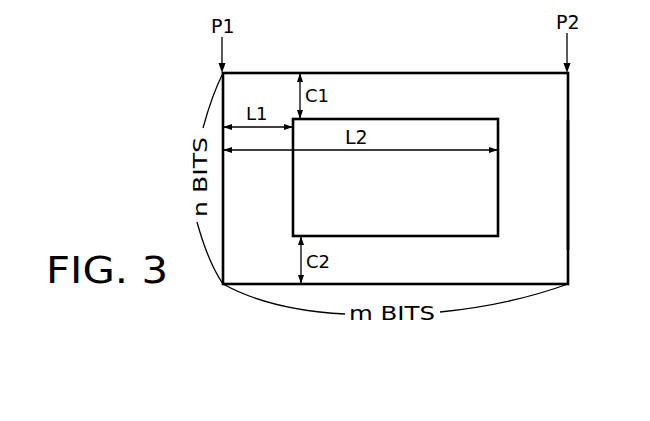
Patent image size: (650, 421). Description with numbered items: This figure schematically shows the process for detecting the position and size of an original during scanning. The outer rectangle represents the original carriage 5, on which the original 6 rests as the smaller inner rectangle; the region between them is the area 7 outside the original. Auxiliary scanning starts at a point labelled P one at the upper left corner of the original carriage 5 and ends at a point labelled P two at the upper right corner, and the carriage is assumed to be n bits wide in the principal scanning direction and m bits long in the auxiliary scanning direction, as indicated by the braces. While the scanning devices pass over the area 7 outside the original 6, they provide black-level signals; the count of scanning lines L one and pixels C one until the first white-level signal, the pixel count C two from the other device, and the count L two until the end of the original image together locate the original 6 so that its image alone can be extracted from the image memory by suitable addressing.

The original carriage 5 is at (568, 111).
The original 6 is at (491, 213).
The area outside the original 7 is at (559, 184).